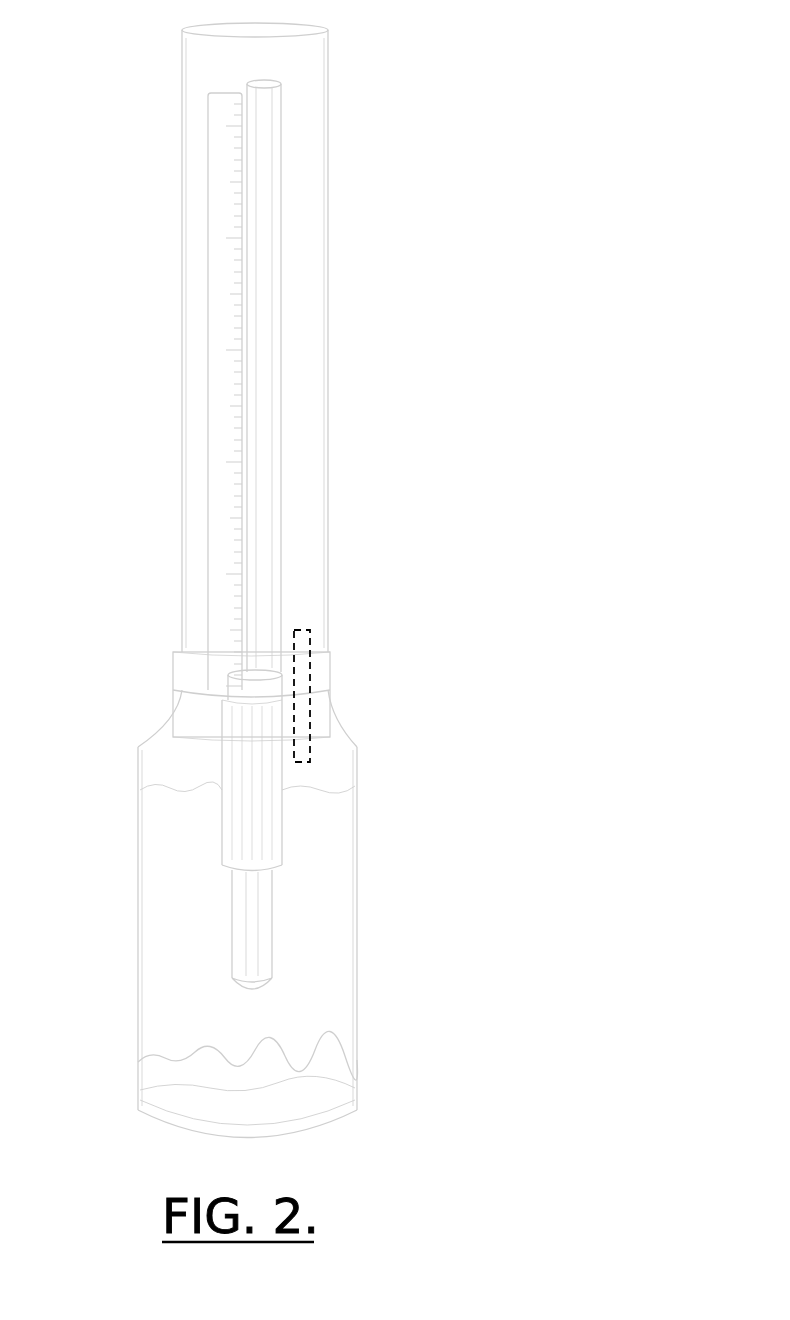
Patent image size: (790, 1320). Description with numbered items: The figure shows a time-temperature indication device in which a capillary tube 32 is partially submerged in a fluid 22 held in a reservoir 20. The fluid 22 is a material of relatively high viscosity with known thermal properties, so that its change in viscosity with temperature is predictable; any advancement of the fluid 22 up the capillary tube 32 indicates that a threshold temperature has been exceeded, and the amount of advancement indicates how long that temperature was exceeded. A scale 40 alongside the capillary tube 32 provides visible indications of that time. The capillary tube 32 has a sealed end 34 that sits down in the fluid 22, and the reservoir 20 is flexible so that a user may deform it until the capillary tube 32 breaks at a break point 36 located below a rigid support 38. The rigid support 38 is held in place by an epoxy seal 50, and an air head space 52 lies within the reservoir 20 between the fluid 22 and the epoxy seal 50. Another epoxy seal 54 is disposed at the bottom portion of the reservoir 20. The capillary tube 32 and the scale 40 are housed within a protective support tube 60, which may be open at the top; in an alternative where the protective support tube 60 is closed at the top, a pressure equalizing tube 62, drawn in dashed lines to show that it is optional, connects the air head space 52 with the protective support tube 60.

The reservoir 20 is at (365, 940).
The fluid 22 is at (330, 1012).
The capillary tube 32 is at (292, 228).
The sealed end 34 is at (240, 975).
The break point 36 is at (278, 868).
The rigid support 38 is at (215, 775).
The scale 40 is at (213, 200).
The epoxy seal 50 is at (200, 705).
The air head space 52 is at (330, 755).
The epoxy seal 54 is at (310, 1100).
The protective support tube 60 is at (330, 130).
The pressure equalizing tube 62 is at (305, 667).